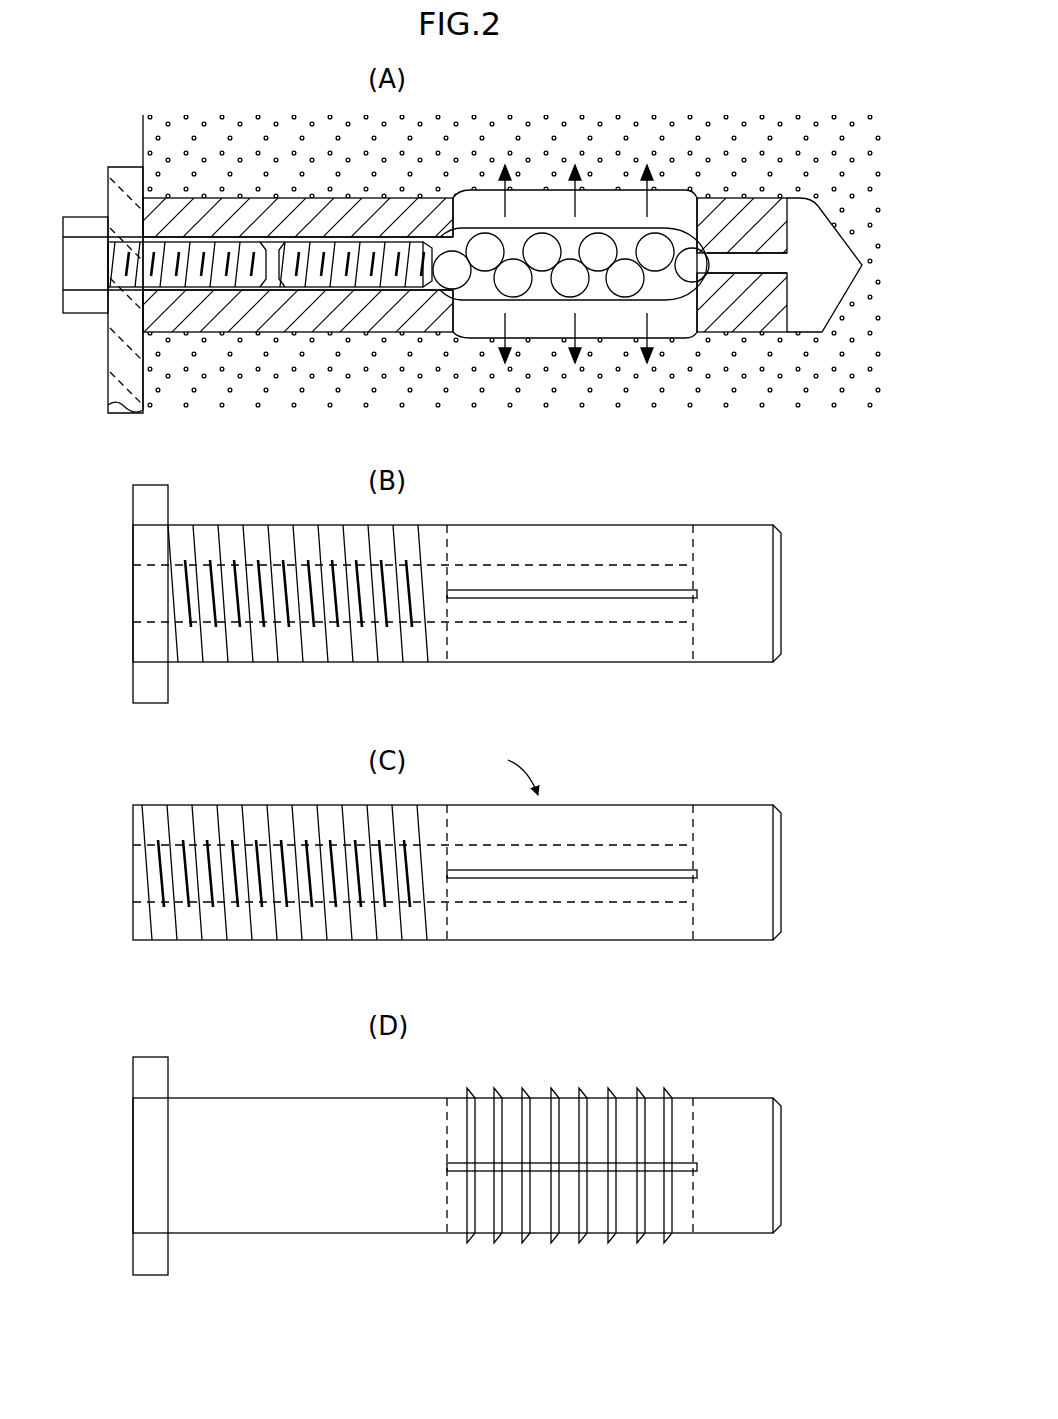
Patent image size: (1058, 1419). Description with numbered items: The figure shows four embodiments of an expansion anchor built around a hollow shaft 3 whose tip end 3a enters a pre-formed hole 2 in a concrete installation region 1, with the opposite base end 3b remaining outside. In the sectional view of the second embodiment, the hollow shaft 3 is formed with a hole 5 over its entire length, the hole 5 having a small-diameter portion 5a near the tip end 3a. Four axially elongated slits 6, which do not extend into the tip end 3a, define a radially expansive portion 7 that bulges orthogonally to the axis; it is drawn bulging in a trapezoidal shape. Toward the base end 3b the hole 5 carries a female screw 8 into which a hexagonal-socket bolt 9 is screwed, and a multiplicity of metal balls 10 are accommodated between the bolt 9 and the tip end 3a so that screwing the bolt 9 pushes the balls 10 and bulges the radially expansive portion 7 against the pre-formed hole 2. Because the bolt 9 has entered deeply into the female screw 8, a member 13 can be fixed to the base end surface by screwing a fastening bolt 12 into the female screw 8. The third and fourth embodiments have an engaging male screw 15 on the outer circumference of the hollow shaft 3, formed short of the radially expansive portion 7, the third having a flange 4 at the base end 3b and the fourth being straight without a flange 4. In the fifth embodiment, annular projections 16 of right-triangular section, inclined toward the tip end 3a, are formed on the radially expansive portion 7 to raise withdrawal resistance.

The installation region 1 is at (197, 150).
The pre-formed hole 2 is at (803, 212).
The hollow shaft 3 is at (286, 210).
The tip end 3a is at (747, 323).
The base end 3b is at (145, 592).
The flange 4 is at (147, 503).
The hole 5 is at (470, 300).
The small-diameter portion 5a is at (737, 263).
The slits 6 is at (640, 640).
The radially expansive portion 7 is at (603, 181).
The female screw 8 is at (243, 242).
The hexagonal-socket bolt 9 is at (331, 247).
The metal balls 10 is at (500, 256).
The fastening bolt 12 is at (82, 224).
The member 13 is at (118, 331).
The engaging male screw 15 is at (300, 635).
The annular projections 16 is at (528, 1090).